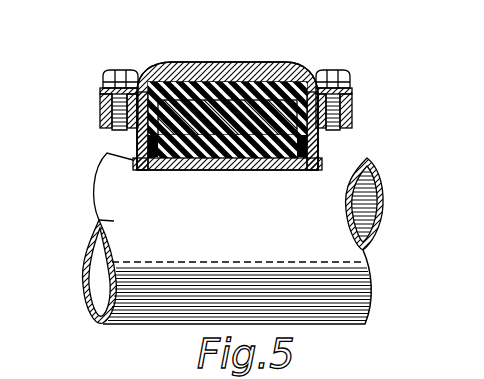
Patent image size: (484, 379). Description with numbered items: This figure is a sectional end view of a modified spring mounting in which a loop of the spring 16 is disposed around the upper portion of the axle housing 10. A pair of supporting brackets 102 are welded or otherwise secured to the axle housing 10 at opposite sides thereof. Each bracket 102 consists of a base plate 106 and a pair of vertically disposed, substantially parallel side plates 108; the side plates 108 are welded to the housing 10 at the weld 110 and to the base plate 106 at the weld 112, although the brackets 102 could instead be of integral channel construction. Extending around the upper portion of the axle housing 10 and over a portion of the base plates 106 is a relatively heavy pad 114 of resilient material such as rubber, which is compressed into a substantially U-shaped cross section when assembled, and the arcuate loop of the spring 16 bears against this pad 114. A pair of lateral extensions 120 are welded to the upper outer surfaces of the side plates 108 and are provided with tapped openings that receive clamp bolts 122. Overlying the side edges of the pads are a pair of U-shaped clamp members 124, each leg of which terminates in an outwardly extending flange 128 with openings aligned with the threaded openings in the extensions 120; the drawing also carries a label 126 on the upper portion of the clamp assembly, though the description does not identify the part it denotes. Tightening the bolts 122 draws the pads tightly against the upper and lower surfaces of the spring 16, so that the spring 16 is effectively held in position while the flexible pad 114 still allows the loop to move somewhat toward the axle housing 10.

The axle housing 10 is at (100, 228).
The spring 16 is at (190, 106).
The supporting bracket 102 is at (227, 125).
The base plate 106 is at (275, 165).
The side plate 108 is at (135, 143).
The weld 110 is at (133, 167).
The weld 112 is at (157, 171).
The pad 114 is at (200, 171).
The lateral extension 120 is at (108, 113).
The clamp bolt 122 is at (118, 73).
The clamp member 124 is at (232, 73).
The cover 126 is at (268, 63).
The flange 128 is at (104, 96).